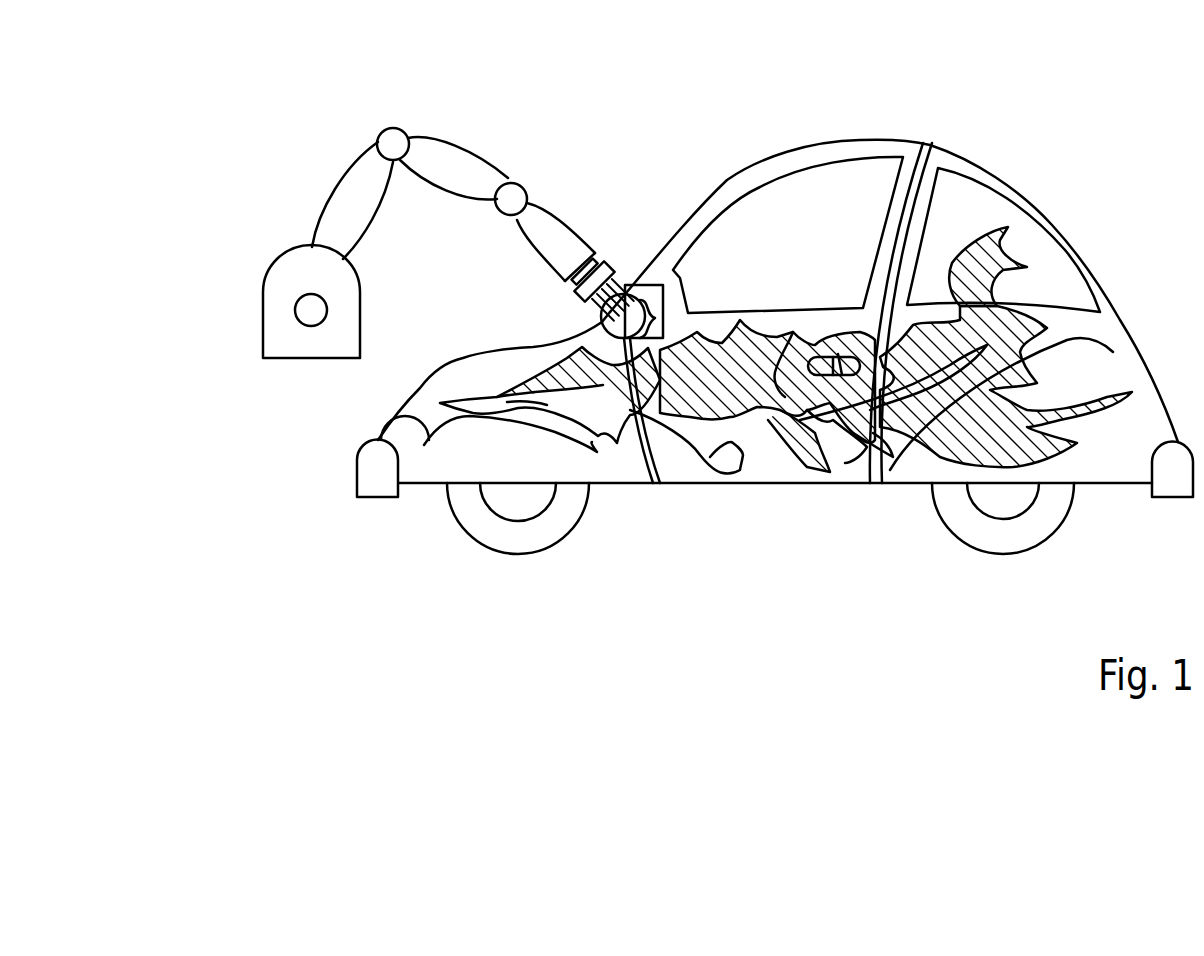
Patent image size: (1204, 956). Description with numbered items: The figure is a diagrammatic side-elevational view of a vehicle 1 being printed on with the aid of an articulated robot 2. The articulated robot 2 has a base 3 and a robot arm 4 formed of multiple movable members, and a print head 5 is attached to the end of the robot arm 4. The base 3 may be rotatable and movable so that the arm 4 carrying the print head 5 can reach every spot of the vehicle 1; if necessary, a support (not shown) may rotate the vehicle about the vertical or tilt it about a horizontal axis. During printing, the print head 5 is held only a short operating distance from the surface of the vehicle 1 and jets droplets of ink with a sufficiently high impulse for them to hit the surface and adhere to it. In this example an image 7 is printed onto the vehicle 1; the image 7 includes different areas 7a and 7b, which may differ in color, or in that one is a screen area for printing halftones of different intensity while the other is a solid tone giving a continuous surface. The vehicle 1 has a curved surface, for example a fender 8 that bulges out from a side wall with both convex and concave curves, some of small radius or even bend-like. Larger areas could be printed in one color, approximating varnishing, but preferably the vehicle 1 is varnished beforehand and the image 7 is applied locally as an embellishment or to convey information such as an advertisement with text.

The vehicle 1 is at (602, 363).
The articulated robot 2 is at (403, 212).
The base 3 is at (288, 335).
The robot arm 4 is at (435, 158).
The print head 5 is at (607, 272).
The image 7 is at (602, 403).
The area 7a is at (773, 432).
The area 7b is at (777, 440).
The fender 8 is at (390, 419).